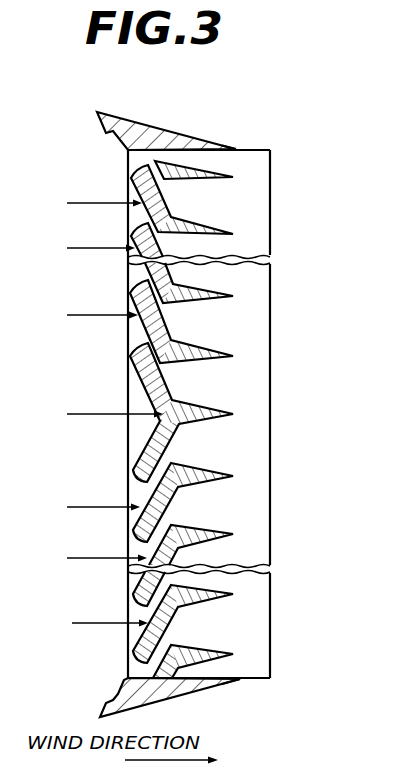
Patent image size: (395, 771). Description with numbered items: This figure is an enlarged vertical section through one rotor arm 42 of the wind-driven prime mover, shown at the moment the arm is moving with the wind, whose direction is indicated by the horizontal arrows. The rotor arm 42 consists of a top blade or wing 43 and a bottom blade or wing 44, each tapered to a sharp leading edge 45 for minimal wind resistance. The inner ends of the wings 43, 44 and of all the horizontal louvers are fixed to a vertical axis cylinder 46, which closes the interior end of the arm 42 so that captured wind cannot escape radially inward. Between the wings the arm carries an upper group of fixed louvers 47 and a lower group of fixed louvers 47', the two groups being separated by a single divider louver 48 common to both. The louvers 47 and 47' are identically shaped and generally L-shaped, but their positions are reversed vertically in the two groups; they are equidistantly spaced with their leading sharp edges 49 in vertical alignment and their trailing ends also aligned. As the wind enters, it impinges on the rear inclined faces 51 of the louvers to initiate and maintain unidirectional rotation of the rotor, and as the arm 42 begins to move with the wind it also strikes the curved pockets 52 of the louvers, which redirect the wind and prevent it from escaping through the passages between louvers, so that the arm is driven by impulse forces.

The rotor arm 42 is at (119, 537).
The top blade or wing 43 is at (226, 152).
The bottom blade or wing 44 is at (198, 689).
The sharp leading edge 45 is at (240, 148).
The vertical axis cylinder 46 is at (256, 378).
The upper group of fixed louvers 47 is at (153, 318).
The lower group of fixed louvers 47' is at (117, 589).
The divider louver 48 is at (152, 388).
The leading sharp edge 49 is at (233, 293).
The rear inclined face 51 is at (143, 212).
The curved pocket 52 is at (146, 173).